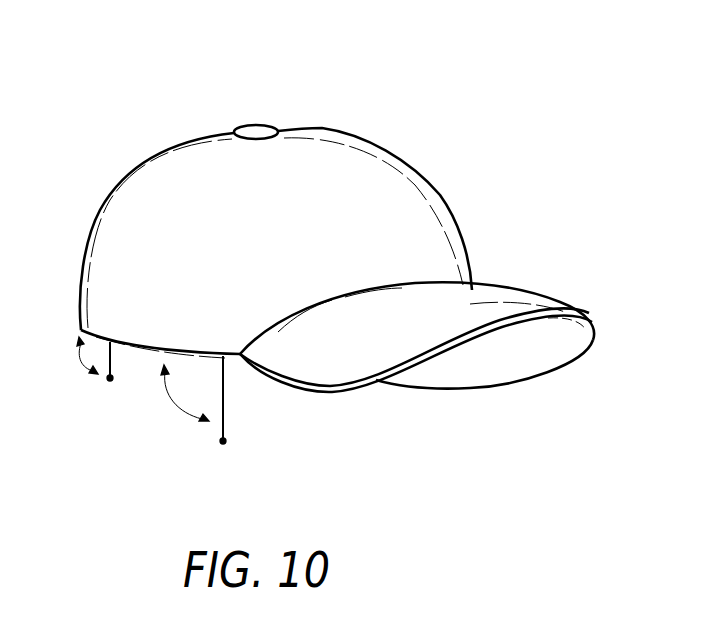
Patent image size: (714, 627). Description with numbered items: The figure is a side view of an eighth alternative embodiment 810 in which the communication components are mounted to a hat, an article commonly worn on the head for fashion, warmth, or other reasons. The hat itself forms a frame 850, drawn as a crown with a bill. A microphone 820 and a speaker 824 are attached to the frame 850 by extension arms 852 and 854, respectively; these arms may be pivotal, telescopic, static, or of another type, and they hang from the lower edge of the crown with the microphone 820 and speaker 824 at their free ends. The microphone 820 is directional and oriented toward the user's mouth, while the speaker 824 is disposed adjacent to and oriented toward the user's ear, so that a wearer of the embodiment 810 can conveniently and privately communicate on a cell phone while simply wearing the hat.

The eighth alternative embodiment 810 is at (317, 256).
The microphone 820 is at (223, 442).
The speaker 824 is at (110, 380).
The frame 850 is at (437, 188).
The extension arm 852 is at (226, 400).
The extension arm 854 is at (114, 358).